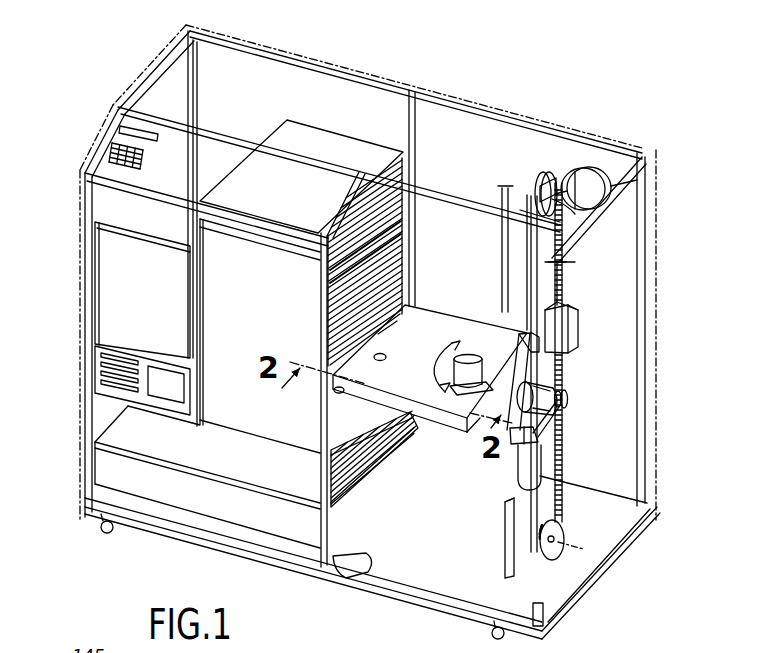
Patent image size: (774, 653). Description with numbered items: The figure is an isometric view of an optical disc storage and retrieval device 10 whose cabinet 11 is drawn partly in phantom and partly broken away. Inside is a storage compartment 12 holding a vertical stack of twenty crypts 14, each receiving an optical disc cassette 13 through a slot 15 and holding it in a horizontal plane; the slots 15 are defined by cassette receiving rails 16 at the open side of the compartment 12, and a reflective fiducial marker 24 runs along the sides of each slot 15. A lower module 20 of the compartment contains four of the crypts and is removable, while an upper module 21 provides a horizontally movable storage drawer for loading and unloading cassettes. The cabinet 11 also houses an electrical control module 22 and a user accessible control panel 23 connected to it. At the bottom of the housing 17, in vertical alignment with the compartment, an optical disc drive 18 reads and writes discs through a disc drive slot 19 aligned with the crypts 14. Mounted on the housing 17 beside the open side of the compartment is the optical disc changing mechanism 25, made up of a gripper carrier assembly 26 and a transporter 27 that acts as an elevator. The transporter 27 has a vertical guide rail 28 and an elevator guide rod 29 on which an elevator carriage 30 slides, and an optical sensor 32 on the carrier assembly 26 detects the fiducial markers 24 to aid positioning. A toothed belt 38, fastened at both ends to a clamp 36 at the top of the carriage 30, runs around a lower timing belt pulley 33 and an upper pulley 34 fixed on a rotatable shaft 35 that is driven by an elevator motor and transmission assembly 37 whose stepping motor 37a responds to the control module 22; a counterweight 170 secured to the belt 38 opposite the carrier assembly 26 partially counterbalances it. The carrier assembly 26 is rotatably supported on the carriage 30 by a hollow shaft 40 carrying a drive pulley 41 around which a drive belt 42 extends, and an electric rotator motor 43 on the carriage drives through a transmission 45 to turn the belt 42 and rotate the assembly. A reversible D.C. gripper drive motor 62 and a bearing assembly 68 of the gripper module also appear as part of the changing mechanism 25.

The optical disc storage and retrieval device 10 is at (589, 36).
The cabinet 11 is at (190, 28).
The storage compartment 12 is at (254, 300).
The cassette 13 is at (403, 211).
The crypt 14 is at (406, 221).
The slot 15 is at (406, 233).
The cassette receiving rail 16 is at (397, 317).
The housing 17 is at (352, 569).
The optical disc drive 18 is at (351, 519).
The disc drive slot 19 is at (364, 479).
The lower module 20 is at (222, 450).
The upper module 21 is at (319, 136).
The electrical control module 22 is at (126, 297).
The control panel 23 is at (118, 143).
The reflective fiducial marker 24 is at (331, 379).
The optical disc changing mechanism 25 is at (509, 166).
The gripper/carrier assembly 26 is at (473, 308).
The transporter 27 is at (553, 158).
The vertical guide rail 28 is at (505, 544).
The elevator guide rod 29 is at (530, 548).
The elevator carriage 30 is at (528, 368).
The optical sensor 32 is at (371, 353).
The lower timing belt pulley 33 is at (563, 532).
The drive pulley 34 is at (543, 182).
The rotatable shaft 35 is at (570, 207).
The clamp 36 is at (578, 327).
The elevator motor and transmission assembly 37 is at (589, 156).
The elevator motor 37a is at (634, 156).
The toothed belt 38 is at (545, 292).
The hollow shaft 40 is at (565, 396).
The drive pulley 41 is at (566, 401).
The drive belt 42 is at (553, 439).
The rotator motor 43 is at (512, 465).
The transmission 45 is at (562, 484).
The gripper drive motor 62 is at (469, 356).
The bearing assembly 68 is at (388, 355).
The counterweight 170 is at (566, 323).